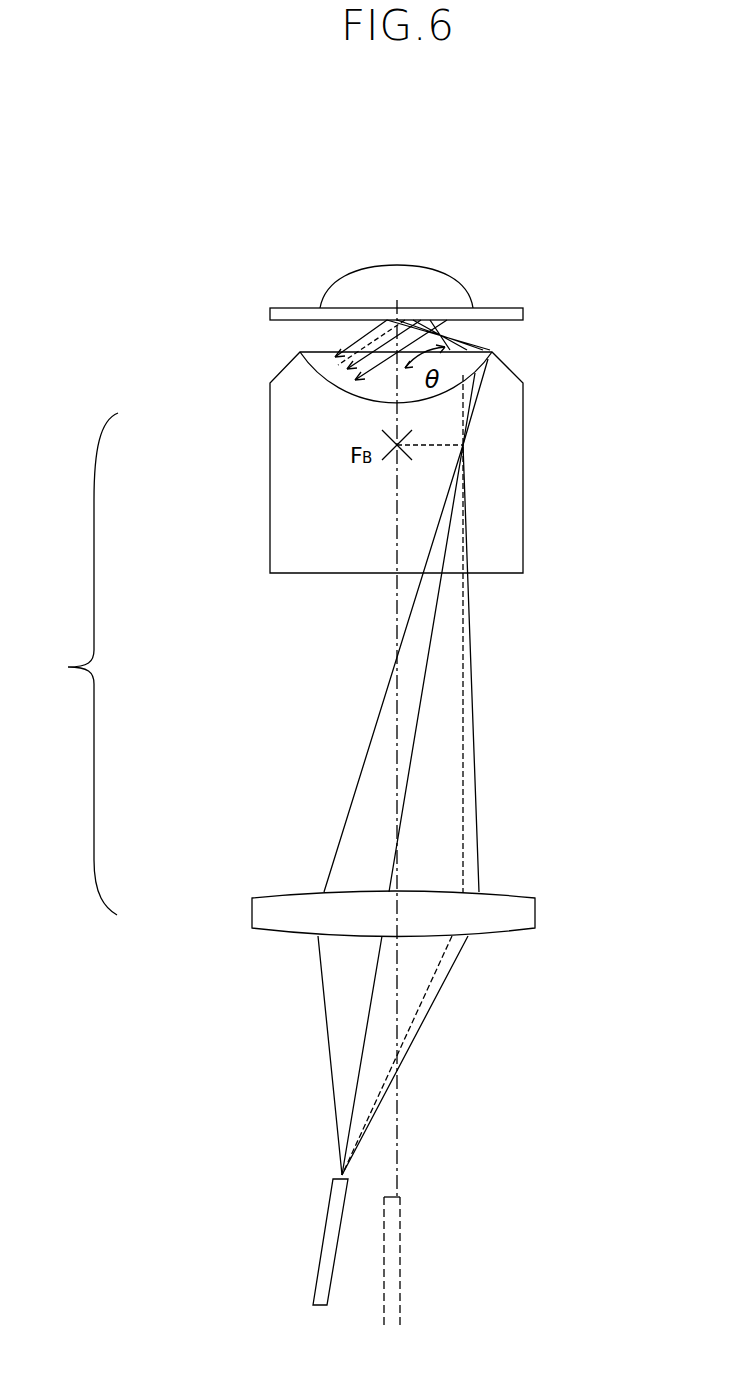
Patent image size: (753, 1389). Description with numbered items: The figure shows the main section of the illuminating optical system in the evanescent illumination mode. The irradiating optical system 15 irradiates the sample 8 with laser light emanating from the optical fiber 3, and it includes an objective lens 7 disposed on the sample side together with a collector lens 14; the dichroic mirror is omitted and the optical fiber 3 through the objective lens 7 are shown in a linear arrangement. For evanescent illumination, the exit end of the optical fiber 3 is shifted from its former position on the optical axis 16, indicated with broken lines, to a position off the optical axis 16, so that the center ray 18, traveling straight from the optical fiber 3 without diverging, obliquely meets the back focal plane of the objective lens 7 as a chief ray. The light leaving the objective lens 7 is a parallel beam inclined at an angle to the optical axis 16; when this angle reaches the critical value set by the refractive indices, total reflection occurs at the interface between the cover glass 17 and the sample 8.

The optical fiber 3 is at (330, 1255).
The objective lens 7 is at (277, 413).
The sample 8 is at (362, 285).
The collector lens 14 is at (262, 913).
The irradiating optical system 15 is at (74, 664).
The optical axis 16 is at (393, 732).
The cover glass 17 is at (270, 315).
The center ray 18 is at (403, 805).